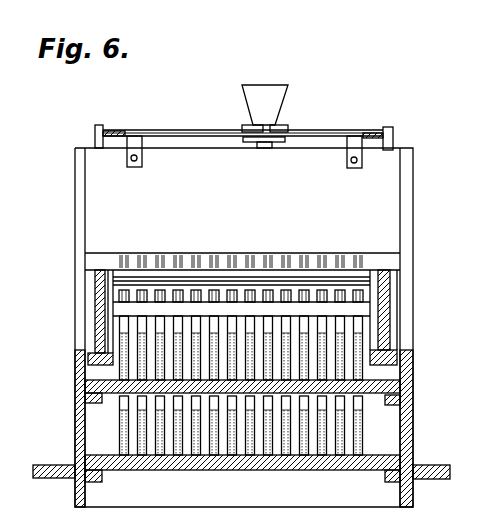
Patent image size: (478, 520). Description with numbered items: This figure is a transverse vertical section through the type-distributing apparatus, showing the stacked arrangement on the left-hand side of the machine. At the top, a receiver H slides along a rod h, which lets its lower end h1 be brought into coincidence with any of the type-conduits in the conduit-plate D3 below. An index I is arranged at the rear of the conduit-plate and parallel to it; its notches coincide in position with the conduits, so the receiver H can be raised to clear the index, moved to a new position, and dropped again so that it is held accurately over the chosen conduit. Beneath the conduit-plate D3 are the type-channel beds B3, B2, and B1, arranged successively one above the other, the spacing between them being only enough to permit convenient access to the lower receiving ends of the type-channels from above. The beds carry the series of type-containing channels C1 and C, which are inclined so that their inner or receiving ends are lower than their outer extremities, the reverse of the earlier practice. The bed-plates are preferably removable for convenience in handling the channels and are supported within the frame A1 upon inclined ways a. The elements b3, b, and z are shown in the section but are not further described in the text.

The conduit-plate D3 is at (244, 327).
The rod h is at (118, 126).
The index I is at (243, 141).
The receiver H is at (265, 108).
The lower end of receiver h1 is at (250, 143).
The frame A1 is at (74, 304).
The upper tube openings b3 is at (241, 262).
The slide plate b is at (241, 284).
The type-channel bed B3 is at (284, 308).
The type-containing channel C1 is at (241, 348).
The type-channel bed B2 is at (242, 387).
The type-containing channel C is at (241, 425).
The type-channel bed B1 is at (242, 462).
The step blocks z is at (88, 371).
The inclined way a is at (74, 397).